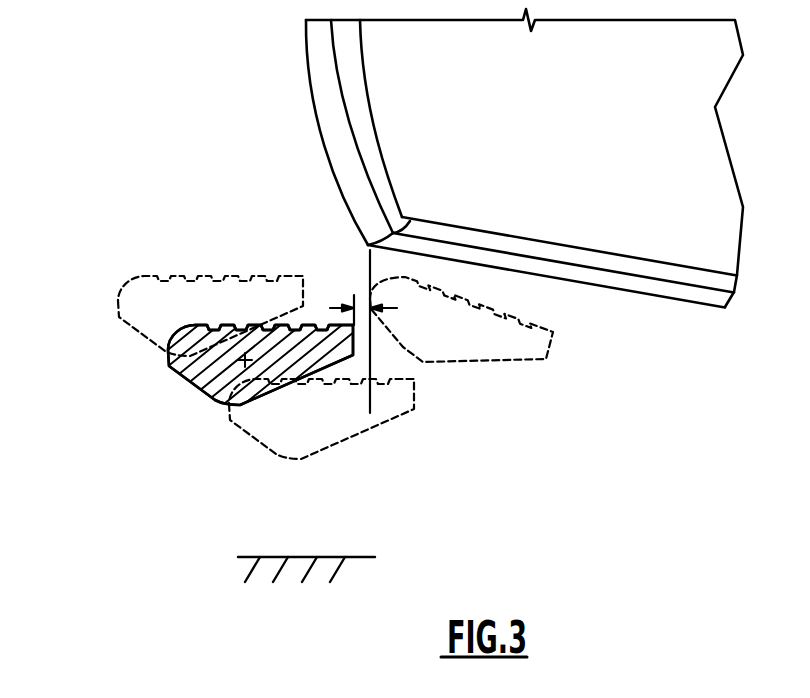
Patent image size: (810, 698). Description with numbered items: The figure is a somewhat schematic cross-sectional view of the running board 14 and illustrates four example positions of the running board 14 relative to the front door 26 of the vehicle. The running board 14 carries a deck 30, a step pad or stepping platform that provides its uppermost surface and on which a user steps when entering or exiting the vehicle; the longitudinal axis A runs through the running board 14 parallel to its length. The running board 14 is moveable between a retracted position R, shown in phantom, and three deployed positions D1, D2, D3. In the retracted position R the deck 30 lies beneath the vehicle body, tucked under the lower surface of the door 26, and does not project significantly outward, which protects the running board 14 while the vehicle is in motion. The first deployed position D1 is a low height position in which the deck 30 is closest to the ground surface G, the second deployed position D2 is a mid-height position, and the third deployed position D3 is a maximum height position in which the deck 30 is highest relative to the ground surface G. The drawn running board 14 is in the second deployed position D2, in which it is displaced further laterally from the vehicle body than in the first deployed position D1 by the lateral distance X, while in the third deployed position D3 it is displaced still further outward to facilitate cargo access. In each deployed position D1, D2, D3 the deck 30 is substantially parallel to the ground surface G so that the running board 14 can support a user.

The front door 26 is at (311, 87).
The running board 14 is at (157, 354).
The deck 30 is at (250, 326).
The first deployed position D1 is at (250, 448).
The second deployed position D2 is at (173, 398).
The third deployed position D3 is at (111, 281).
The retracted position R is at (535, 307).
The lateral distance X is at (397, 308).
The longitudinal axis A is at (243, 362).
The ground surface G is at (278, 557).